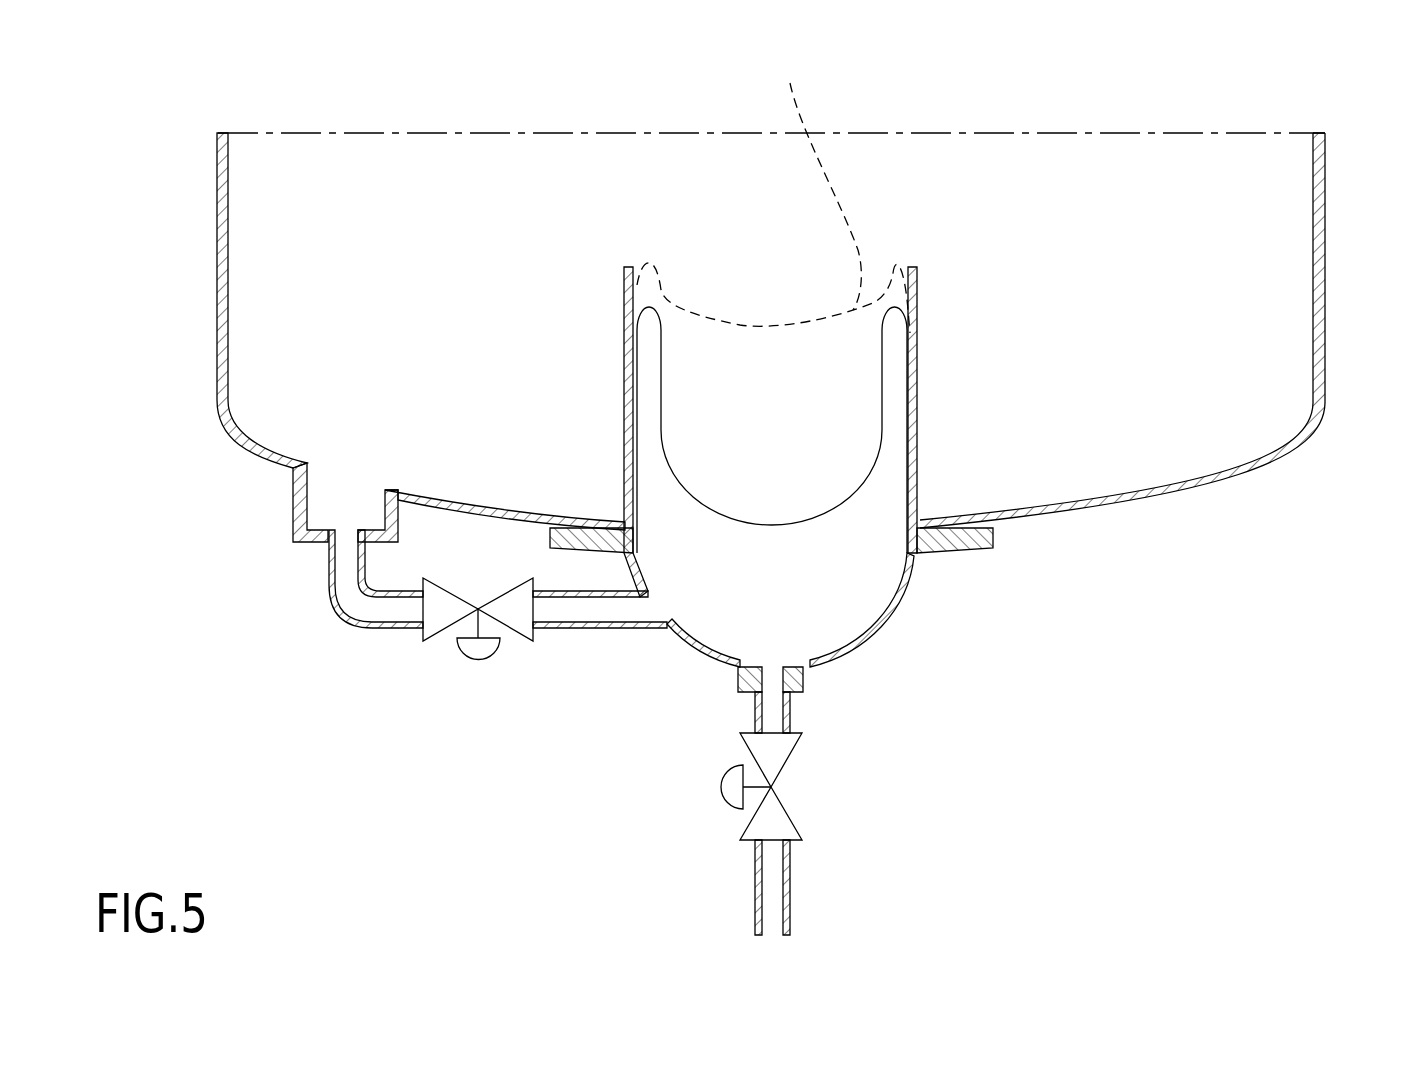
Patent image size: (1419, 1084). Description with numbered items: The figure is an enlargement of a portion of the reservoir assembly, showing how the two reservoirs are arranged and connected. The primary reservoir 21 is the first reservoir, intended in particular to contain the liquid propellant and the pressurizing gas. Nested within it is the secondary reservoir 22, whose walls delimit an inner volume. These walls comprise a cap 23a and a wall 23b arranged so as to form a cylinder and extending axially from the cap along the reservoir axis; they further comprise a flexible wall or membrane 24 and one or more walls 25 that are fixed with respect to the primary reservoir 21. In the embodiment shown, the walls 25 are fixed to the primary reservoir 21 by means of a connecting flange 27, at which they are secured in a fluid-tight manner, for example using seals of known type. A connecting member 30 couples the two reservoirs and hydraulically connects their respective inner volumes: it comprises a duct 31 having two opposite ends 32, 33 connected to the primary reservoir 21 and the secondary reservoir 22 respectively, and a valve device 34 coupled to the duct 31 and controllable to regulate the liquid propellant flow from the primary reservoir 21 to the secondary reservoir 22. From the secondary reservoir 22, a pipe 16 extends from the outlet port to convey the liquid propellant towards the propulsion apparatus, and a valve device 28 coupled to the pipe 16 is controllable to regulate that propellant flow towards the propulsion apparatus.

The pipe 16 is at (793, 870).
The primary reservoir 21 is at (1327, 278).
The secondary reservoir 22 is at (916, 483).
The cap 23a is at (897, 607).
The wall 23b is at (920, 313).
The flexible wall 24 is at (762, 525).
The walls 25 is at (627, 423).
The connecting flange 27 is at (993, 548).
The valve device 28 is at (783, 768).
The connecting member 30 is at (457, 626).
The duct 31 is at (338, 607).
The end 32 is at (292, 494).
The end 33 is at (655, 628).
The valve device 34 is at (520, 623).